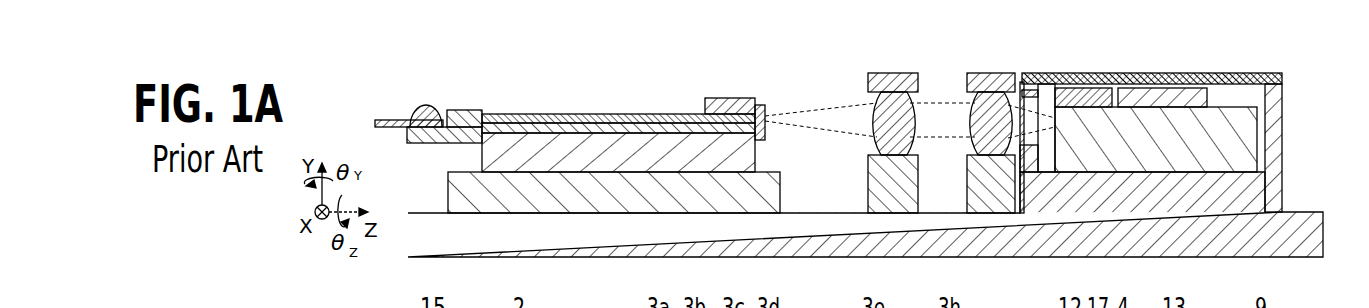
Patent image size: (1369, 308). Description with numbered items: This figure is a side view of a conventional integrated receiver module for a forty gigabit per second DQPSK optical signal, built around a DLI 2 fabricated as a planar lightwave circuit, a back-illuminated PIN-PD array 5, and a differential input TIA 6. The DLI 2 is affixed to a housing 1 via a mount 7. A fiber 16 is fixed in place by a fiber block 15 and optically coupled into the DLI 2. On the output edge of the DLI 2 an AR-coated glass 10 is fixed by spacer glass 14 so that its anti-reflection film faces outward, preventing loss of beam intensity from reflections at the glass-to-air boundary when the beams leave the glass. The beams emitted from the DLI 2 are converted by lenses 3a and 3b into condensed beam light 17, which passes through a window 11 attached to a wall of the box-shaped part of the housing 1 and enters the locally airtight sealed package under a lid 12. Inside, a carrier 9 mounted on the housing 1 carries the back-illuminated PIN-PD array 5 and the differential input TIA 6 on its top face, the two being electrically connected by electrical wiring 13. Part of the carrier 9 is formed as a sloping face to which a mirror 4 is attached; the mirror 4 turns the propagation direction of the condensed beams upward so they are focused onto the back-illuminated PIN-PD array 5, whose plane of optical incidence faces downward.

The housing 1 is at (607, 235).
The DLI 2 is at (497, 114).
The lens 3a is at (875, 105).
The lens 3b is at (974, 105).
The mirror 4 is at (1075, 120).
The back-illuminated PIN-PD array 5 is at (1087, 86).
The differential input TIA 6 is at (1207, 97).
The mount 7 is at (560, 196).
The carrier 9 is at (1208, 160).
The AR-coated glass 10 is at (762, 105).
The window 11 is at (1025, 88).
The lid 12 is at (1282, 70).
The electrical wiring 13 is at (1120, 84).
The spacer glass 14 is at (705, 104).
The fiber block 15 is at (463, 110).
The fiber 16 is at (390, 120).
The condensed beam light 17 is at (1067, 83).